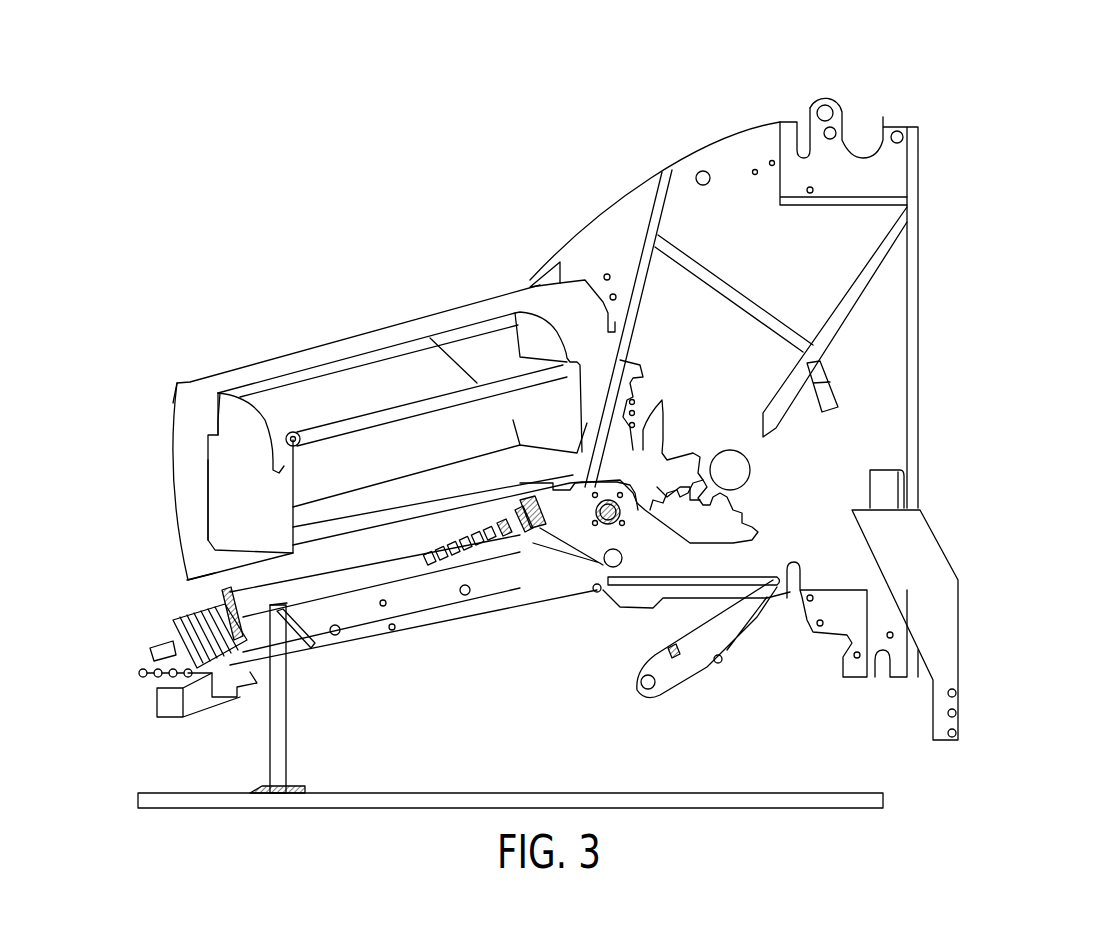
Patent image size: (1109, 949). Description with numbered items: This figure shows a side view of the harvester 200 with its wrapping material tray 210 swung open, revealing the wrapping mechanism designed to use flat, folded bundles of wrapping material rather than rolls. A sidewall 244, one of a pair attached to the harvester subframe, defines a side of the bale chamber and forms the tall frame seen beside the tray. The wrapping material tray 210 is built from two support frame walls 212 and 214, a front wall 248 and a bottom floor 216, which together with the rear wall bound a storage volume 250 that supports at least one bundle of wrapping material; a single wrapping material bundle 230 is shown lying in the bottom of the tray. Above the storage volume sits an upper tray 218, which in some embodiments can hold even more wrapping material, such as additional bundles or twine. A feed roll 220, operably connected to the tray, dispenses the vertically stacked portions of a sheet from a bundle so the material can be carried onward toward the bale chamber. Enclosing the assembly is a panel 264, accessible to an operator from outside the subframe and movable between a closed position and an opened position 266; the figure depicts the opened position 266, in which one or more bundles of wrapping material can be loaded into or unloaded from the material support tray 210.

The harvester 200 is at (503, 167).
The wrapping material tray 210 is at (300, 360).
The support frame wall 212 is at (245, 467).
The support frame wall 214 is at (553, 417).
The bottom floor 216 is at (343, 537).
The upper tray 218 is at (408, 380).
The feed roll 220 is at (480, 393).
The wrapping material bundle 230 is at (397, 490).
The sidewall 244 is at (740, 152).
The front wall 248 is at (310, 463).
The storage volume 250 is at (381, 450).
The panel 264 is at (170, 407).
The opened position 266 is at (172, 562).